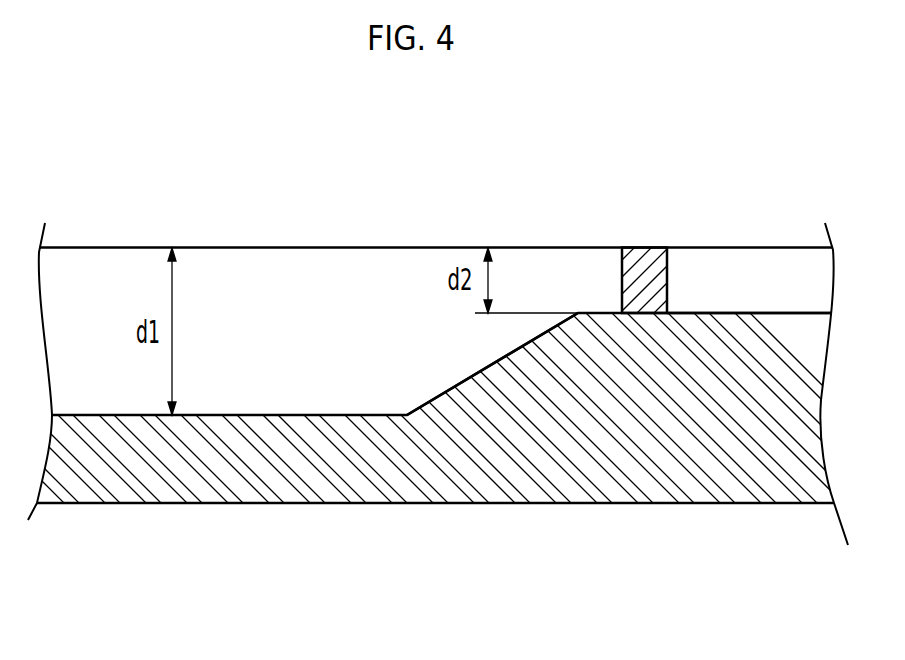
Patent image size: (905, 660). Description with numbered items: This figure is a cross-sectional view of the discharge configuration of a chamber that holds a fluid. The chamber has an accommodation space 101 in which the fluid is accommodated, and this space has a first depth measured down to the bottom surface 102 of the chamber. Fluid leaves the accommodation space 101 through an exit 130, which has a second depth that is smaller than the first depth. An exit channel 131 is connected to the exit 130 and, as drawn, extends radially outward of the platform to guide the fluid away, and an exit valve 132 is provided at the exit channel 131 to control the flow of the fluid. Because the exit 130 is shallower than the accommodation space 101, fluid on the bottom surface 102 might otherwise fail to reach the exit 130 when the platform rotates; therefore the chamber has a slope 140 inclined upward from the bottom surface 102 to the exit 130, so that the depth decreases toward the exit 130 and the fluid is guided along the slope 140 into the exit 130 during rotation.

The accommodation space 101 is at (313, 324).
The bottom surface 102 is at (335, 413).
The exit 130 is at (602, 274).
The exit channel 131 is at (740, 265).
The exit valve 132 is at (649, 265).
The slope 140 is at (474, 378).